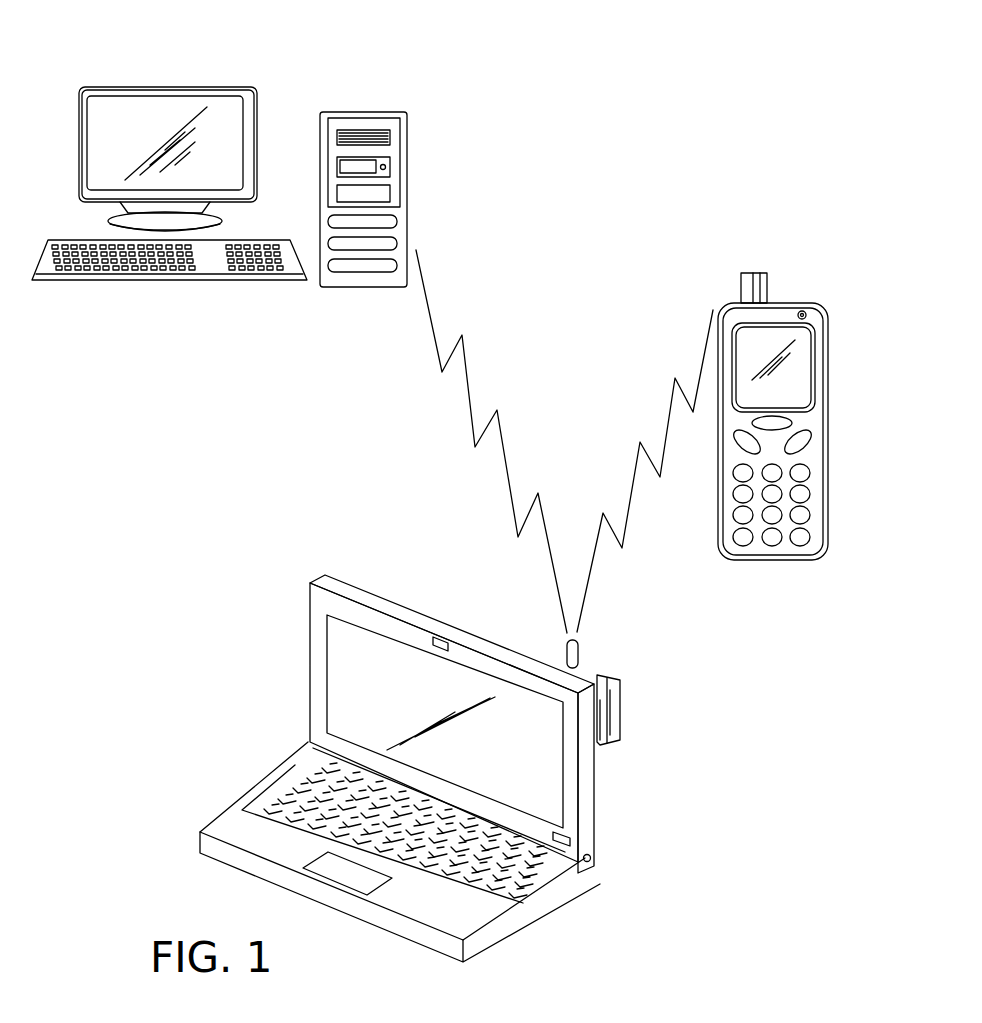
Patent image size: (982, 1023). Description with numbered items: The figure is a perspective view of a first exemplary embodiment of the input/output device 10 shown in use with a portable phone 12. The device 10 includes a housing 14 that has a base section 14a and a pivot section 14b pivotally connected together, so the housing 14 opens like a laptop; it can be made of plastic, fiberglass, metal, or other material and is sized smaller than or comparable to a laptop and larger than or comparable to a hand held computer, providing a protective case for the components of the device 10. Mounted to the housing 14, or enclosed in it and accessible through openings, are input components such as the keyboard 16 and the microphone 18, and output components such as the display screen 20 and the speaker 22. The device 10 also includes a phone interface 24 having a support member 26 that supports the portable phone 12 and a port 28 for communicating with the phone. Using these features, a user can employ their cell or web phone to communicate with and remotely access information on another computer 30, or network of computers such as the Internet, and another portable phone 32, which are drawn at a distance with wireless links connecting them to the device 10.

The input/output device 10 is at (459, 768).
The portable phone 12 is at (657, 720).
The housing 14 is at (400, 768).
The base section 14a is at (293, 777).
The pivot section 14b is at (308, 648).
The keyboard 16 is at (527, 900).
The microphone 18 is at (440, 637).
The display screen 20 is at (525, 787).
The speaker 22 is at (592, 862).
The phone interface 24 is at (632, 680).
The support member 26 is at (620, 720).
The port 28 is at (620, 701).
The another computer 30 is at (345, 50).
The another portable phone 32 is at (808, 266).